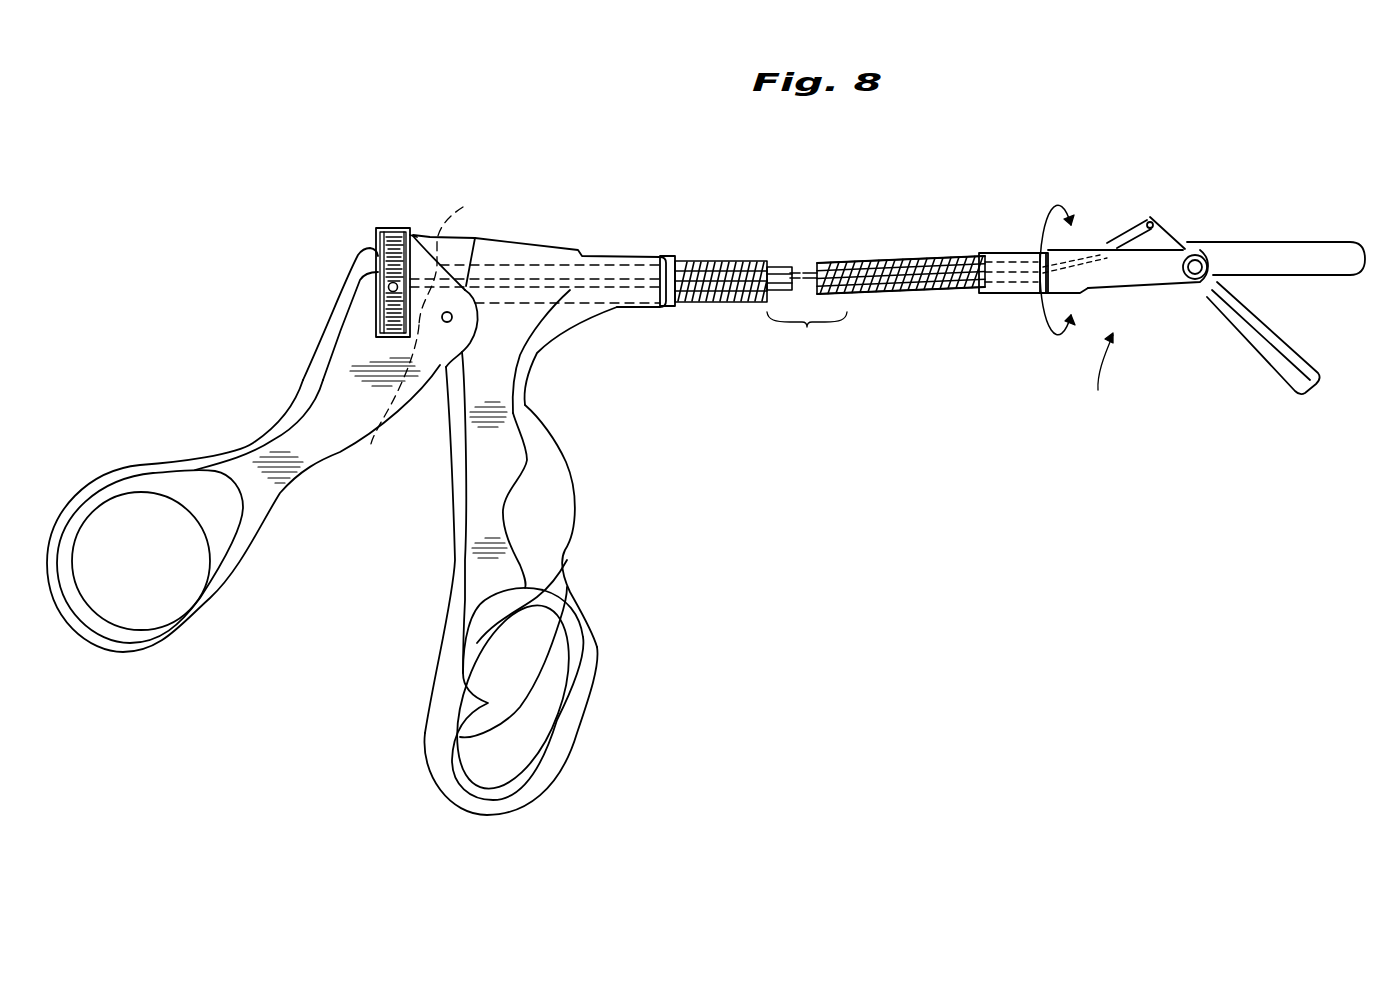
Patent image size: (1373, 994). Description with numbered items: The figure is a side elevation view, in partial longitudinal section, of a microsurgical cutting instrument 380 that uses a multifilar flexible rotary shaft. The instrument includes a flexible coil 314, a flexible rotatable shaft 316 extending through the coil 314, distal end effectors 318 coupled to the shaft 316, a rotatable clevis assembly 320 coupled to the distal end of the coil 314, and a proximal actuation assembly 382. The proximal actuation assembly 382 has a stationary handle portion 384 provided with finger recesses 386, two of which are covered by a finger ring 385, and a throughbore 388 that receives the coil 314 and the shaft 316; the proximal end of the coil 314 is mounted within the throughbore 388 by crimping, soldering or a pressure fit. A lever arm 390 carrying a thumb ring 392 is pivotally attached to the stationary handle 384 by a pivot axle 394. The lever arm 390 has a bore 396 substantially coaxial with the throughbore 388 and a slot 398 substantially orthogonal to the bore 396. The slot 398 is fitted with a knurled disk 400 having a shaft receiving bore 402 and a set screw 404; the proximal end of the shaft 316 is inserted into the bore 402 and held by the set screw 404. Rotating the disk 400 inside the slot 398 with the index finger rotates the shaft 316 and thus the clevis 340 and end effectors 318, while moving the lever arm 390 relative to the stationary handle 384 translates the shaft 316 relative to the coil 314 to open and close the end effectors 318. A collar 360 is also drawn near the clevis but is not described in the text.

The flexible coil 314 is at (947, 293).
The flexible rotatable shaft 316 is at (543, 267).
The distal end effectors 318 is at (1294, 234).
The rotatable clevis assembly 320 is at (1082, 369).
The clevis 340 is at (1160, 277).
The collar 360 is at (1017, 252).
The microsurgical instrument 380 is at (993, 353).
The proximal actuation assembly 382 is at (338, 250).
The stationary handle portion 384 is at (533, 350).
The finger ring 385 is at (575, 718).
The finger recesses 386 is at (513, 513).
The throughbore 388 is at (640, 270).
The lever arm 390 is at (335, 413).
The thumb ring 392 is at (190, 598).
The pivot axle 394 is at (452, 317).
The bore 396 is at (457, 256).
The slot 398 is at (414, 236).
The knurled disk 400 is at (390, 229).
The shaft receiving bore 402 is at (393, 398).
The set screw 404 is at (393, 287).